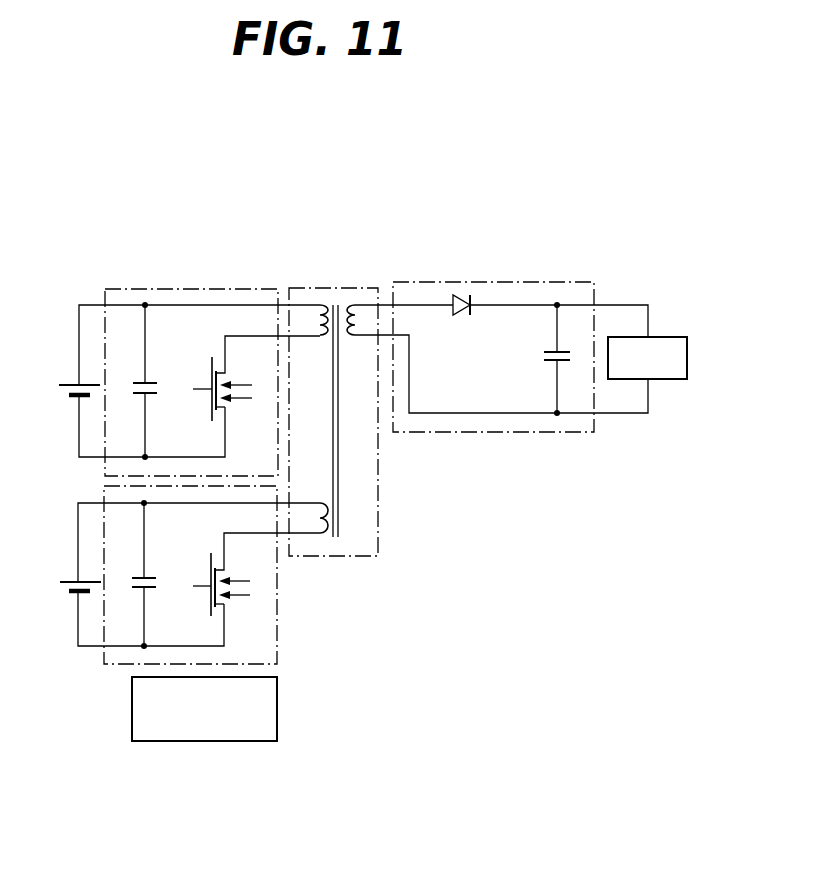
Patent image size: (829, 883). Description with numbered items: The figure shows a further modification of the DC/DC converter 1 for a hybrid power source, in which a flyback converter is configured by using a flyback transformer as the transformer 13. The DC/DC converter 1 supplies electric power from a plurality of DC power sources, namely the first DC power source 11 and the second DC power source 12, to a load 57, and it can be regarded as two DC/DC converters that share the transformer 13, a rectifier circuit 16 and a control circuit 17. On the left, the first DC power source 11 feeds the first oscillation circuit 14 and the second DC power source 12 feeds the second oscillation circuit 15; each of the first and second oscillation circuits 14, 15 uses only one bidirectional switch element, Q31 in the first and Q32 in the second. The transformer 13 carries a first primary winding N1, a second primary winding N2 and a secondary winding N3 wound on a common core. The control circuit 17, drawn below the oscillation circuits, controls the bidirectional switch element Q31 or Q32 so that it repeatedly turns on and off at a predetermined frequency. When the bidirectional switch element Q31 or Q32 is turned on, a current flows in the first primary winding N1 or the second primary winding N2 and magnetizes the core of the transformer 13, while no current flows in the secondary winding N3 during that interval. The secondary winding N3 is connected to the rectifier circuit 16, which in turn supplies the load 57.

The DC/DC converter 1 is at (334, 180).
The first DC power source 11 is at (67, 378).
The second DC power source 12 is at (67, 574).
The transformer 13 is at (379, 484).
The first oscillation circuit 14 is at (199, 289).
The second oscillation circuit 15 is at (279, 598).
The rectifier circuit 16 is at (523, 282).
The control circuit 17 is at (279, 707).
The load 57 is at (670, 337).
The bidirectional switch element Q31 is at (241, 377).
The bidirectional switch element Q32 is at (240, 574).
The first primary winding N1 is at (312, 340).
The second primary winding N2 is at (312, 501).
The secondary winding N3 is at (359, 356).